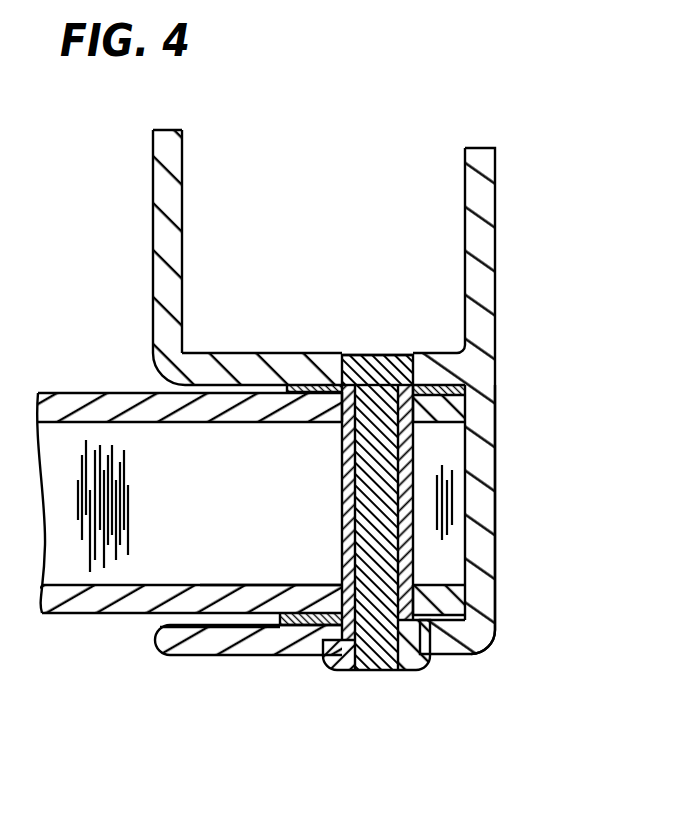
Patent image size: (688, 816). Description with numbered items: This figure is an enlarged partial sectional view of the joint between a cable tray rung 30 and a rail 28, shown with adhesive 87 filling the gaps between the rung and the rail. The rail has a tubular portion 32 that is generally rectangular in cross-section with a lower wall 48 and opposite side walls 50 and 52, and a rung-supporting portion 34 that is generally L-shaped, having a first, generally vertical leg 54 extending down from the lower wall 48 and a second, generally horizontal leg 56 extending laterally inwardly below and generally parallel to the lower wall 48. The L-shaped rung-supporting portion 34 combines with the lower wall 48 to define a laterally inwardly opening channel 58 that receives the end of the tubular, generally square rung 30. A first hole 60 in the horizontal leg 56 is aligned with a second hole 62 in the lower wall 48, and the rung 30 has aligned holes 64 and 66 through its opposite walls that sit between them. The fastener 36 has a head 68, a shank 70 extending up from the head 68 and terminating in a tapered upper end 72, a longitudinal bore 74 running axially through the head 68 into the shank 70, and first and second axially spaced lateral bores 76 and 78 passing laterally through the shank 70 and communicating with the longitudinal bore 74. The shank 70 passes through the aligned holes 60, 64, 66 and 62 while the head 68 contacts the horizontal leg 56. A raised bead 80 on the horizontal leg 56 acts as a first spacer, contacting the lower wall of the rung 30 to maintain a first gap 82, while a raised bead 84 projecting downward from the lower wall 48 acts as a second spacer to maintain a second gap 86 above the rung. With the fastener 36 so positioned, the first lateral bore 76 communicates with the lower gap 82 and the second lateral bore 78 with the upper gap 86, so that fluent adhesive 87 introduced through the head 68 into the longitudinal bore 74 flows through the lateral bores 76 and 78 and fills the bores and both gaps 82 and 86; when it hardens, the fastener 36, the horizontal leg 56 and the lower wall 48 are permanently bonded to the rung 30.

The rail 28 is at (200, 257).
The rung 30 is at (92, 393).
The tubular portion 32 is at (183, 272).
The rung-supporting portion 34 is at (497, 487).
The fastener 36 is at (345, 517).
The lower wall 48 is at (262, 353).
The side wall 50 is at (165, 235).
The side wall 52 is at (465, 183).
The first leg 54 is at (497, 407).
The second leg 56 is at (205, 652).
The channel 58 is at (160, 627).
The first hole 60 is at (412, 670).
The second hole 62 is at (405, 355).
The hole 64 is at (415, 570).
The hole 66 is at (345, 455).
The head 68 is at (345, 670).
The shank 70 is at (345, 560).
The tapered upper end 72 is at (355, 355).
The longitudinal bore 74 is at (385, 670).
The first lateral bore 76 is at (458, 648).
The second lateral bore 78 is at (343, 428).
The raised bead 80 is at (245, 585).
The first gap 82 is at (300, 628).
The raised bead 84 is at (237, 410).
The second gap 86 is at (455, 388).
The adhesive 87 is at (497, 457).